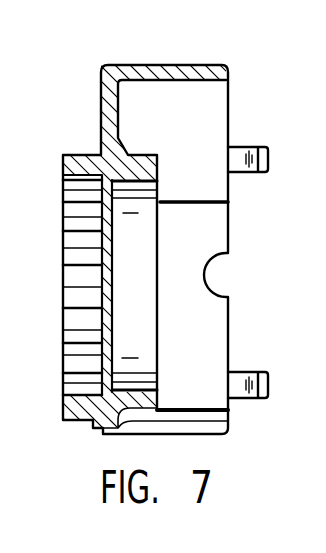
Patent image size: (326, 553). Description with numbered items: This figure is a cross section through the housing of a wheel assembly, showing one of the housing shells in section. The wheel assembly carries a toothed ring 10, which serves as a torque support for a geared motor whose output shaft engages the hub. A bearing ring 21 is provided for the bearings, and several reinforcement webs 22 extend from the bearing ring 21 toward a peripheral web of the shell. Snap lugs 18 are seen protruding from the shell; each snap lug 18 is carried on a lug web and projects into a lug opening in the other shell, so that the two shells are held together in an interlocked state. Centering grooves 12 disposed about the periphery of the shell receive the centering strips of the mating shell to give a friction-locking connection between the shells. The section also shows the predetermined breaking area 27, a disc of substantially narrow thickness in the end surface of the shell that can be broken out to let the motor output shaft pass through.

The toothed ring 10 is at (62, 181).
The centering grooves 12 is at (232, 65).
The snap lugs 18 is at (263, 172).
The bearing ring 21 is at (163, 207).
The reinforcement webs 22 is at (128, 150).
The predetermined breaking area 27 is at (62, 253).